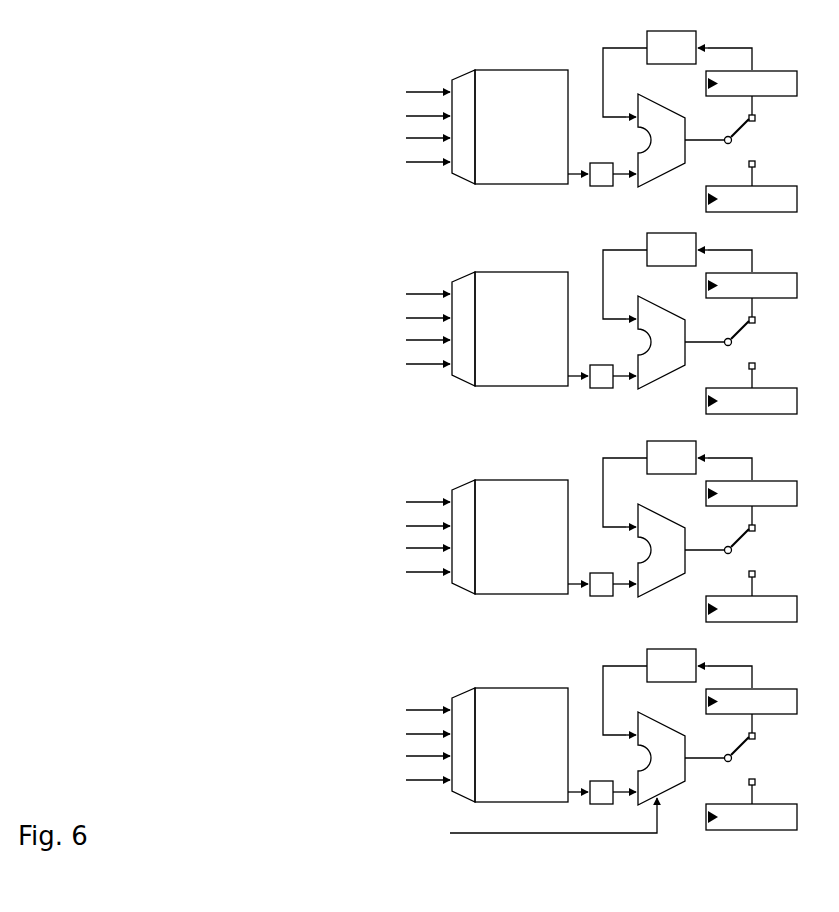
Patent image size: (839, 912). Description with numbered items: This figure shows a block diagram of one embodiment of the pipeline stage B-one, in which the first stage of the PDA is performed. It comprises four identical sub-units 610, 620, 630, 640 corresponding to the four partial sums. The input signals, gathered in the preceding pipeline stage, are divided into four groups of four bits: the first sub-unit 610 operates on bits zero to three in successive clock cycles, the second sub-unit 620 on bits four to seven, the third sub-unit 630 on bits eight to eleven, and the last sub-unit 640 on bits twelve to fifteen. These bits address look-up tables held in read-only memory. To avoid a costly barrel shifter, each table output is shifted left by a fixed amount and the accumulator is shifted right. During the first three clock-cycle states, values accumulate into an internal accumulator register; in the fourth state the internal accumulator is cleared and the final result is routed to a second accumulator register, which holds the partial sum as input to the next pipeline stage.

The first sub-unit 610 is at (475, 70).
The second sub-unit 620 is at (571, 310).
The third sub-unit 630 is at (571, 518).
The last sub-unit 640 is at (564, 731).